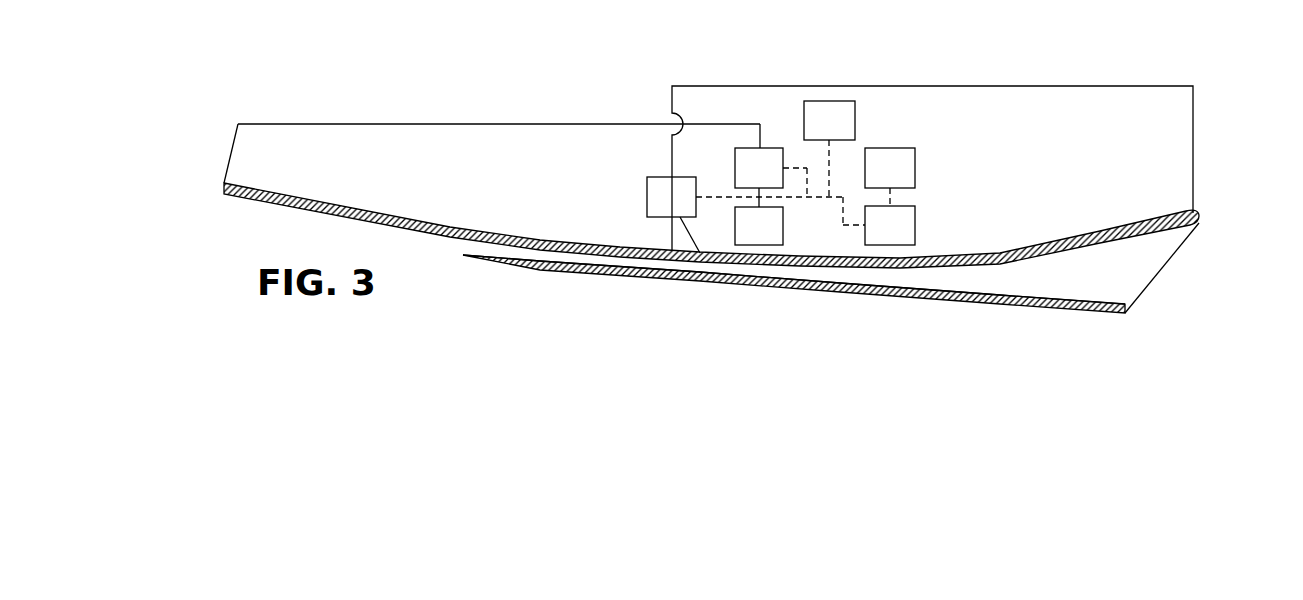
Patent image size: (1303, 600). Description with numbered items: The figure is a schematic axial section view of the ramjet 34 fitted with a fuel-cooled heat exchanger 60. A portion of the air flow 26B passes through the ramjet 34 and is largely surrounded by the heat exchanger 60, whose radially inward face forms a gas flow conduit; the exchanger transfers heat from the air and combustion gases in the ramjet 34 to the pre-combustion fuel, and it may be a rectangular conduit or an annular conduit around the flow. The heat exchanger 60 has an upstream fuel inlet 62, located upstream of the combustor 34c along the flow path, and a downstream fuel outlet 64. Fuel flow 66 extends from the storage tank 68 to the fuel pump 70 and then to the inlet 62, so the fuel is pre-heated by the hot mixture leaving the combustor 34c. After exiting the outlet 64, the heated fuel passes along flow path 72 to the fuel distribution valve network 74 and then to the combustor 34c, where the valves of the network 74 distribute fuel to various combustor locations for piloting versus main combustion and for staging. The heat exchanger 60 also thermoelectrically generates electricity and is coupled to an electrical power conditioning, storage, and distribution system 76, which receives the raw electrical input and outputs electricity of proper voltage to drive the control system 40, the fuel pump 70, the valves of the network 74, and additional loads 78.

The ramjet 34 is at (460, 299).
The combustor 34c is at (707, 266).
The air flow portion 26B is at (931, 278).
The heat exchanger 60 is at (767, 292).
The fuel inlet 62 is at (223, 185).
The fuel outlet 64 is at (1200, 213).
The fuel flow 66 is at (441, 112).
The flow path 72 is at (962, 85).
The fuel distribution valve network 74 is at (685, 209).
The fuel pump 70 is at (773, 180).
The storage tank 68 is at (773, 238).
The additional loads 78 is at (843, 132).
The control system 40 is at (904, 180).
The electrical power conditioning, storage, and distribution system 76 is at (904, 238).